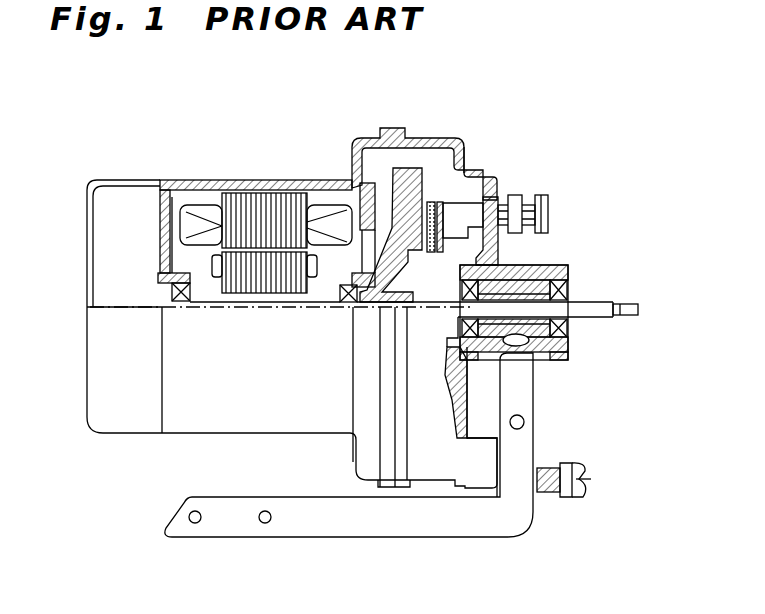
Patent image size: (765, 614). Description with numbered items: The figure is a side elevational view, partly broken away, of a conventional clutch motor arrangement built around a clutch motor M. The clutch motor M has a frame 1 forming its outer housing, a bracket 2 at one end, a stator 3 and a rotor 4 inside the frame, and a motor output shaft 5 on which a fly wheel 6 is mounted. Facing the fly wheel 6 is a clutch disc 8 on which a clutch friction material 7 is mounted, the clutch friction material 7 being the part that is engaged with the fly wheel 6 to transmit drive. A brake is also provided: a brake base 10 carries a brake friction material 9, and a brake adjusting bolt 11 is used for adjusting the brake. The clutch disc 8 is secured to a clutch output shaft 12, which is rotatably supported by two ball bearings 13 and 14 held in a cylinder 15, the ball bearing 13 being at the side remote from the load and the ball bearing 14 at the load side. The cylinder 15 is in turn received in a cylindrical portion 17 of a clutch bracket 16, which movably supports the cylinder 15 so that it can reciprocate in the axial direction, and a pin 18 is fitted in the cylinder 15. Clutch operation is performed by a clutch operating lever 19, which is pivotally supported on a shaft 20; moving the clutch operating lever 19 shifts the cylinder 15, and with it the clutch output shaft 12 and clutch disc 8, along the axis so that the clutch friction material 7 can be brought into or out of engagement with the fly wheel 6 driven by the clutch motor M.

The clutch motor M is at (217, 170).
The frame 1 is at (205, 182).
The bracket 2 is at (350, 200).
The stator 3 is at (255, 213).
The rotor 4 is at (267, 265).
The motor output shaft 5 is at (205, 300).
The fly wheel 6 is at (408, 180).
The clutch friction material 7 is at (437, 205).
The clutch disc 8 is at (447, 205).
The brake friction material 9 is at (465, 212).
The brake base 10 is at (487, 195).
The brake adjusting bolt 11 is at (541, 212).
The clutch output shaft 12 is at (595, 313).
The ball bearing 13 is at (500, 264).
The ball bearing 14 is at (570, 290).
The cylinder 15 is at (550, 273).
The clutch bracket 16 is at (463, 160).
The cylindrical portion 17 is at (568, 267).
The pin 18 is at (517, 343).
The clutch operating lever 19 is at (517, 517).
The shaft 20 is at (524, 422).